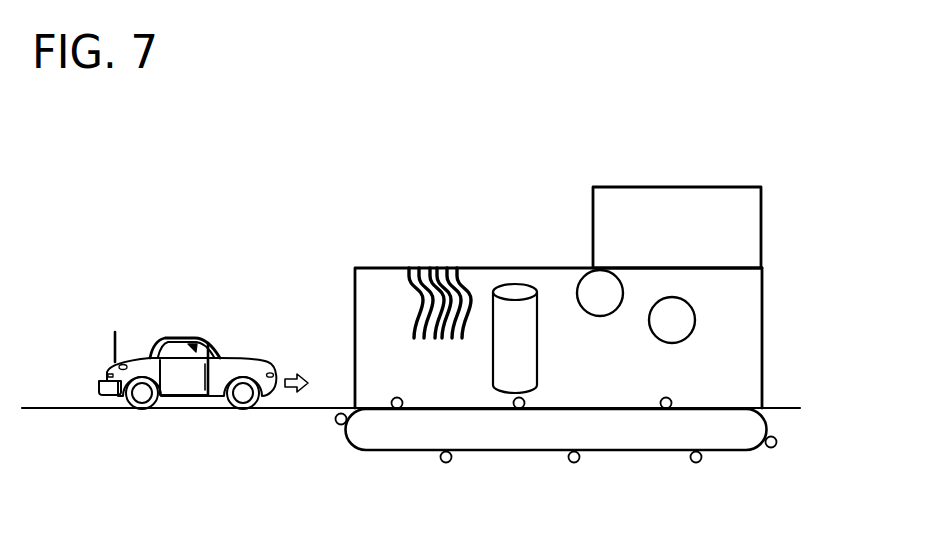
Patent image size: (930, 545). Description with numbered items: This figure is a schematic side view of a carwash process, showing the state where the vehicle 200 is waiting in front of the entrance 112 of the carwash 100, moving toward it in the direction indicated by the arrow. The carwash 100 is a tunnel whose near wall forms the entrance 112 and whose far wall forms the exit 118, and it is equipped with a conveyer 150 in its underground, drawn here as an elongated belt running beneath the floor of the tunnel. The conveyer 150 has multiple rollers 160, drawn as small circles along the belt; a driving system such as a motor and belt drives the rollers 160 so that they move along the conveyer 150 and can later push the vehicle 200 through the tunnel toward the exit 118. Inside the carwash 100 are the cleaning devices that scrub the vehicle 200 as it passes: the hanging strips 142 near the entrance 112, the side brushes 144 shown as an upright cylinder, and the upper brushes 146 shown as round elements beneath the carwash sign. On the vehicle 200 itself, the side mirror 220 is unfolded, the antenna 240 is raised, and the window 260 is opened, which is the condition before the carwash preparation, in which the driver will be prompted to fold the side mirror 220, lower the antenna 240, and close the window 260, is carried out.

The carwash 100 is at (678, 187).
The entrance 112 is at (353, 312).
The exit 118 is at (763, 372).
The strips 142 is at (442, 268).
The side brushes 144 is at (520, 286).
The upper brushes 146 is at (683, 298).
The conveyer 150 is at (428, 480).
The rollers 160 is at (395, 409).
The vehicle 200 is at (172, 337).
The side mirror 220 is at (207, 364).
The antenna 240 is at (115, 360).
The window 260 is at (192, 341).